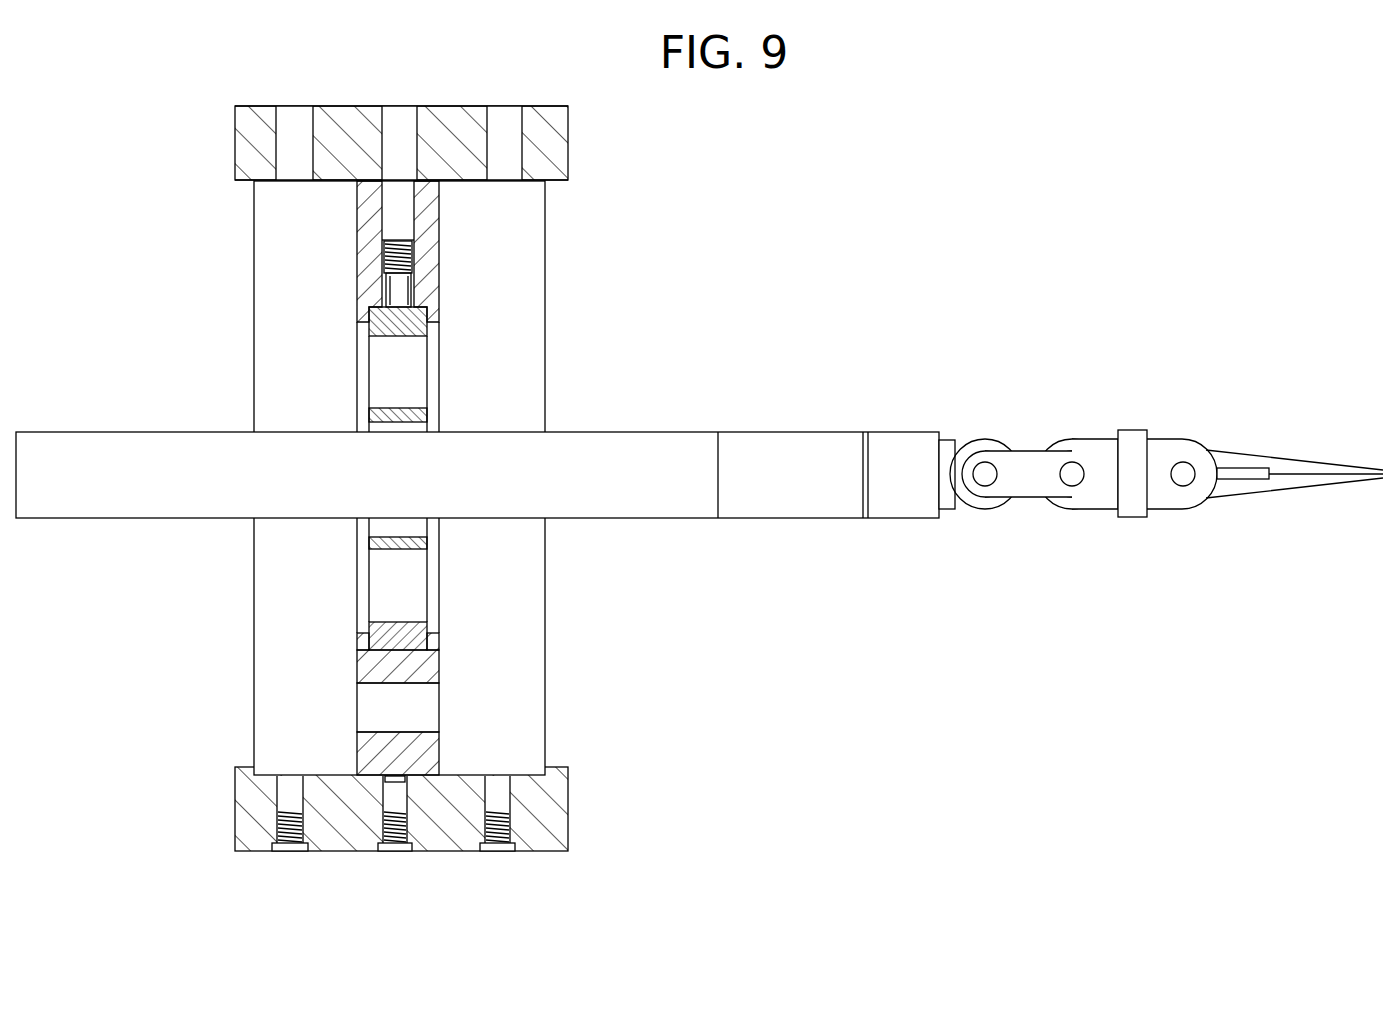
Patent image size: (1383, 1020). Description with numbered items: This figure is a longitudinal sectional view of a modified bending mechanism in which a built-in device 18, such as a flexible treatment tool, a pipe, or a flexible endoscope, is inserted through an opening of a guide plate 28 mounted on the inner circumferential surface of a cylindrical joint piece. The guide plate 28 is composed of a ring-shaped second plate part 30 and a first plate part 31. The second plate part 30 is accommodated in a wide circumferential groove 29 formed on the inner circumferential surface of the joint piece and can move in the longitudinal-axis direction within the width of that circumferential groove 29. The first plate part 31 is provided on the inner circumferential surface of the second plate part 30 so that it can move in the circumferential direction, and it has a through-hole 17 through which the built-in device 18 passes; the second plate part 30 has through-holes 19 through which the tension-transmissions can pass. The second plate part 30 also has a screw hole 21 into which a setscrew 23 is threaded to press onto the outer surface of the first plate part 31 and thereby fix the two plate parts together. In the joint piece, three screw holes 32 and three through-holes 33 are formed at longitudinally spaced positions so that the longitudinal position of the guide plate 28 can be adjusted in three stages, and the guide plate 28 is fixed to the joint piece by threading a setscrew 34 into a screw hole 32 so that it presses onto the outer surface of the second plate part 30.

The through-hole 17 is at (395, 622).
The built-in device 18 is at (665, 431).
The through-hole 19 is at (373, 727).
The screw hole 21 is at (383, 248).
The setscrew 23 is at (397, 288).
The guide plate 28 is at (442, 659).
The circumferential groove 29 is at (470, 773).
The second plate part 30 is at (440, 213).
The first plate part 31 is at (428, 332).
The screw hole 32 is at (497, 833).
The through-hole 33 is at (487, 130).
The setscrew 34 is at (412, 825).